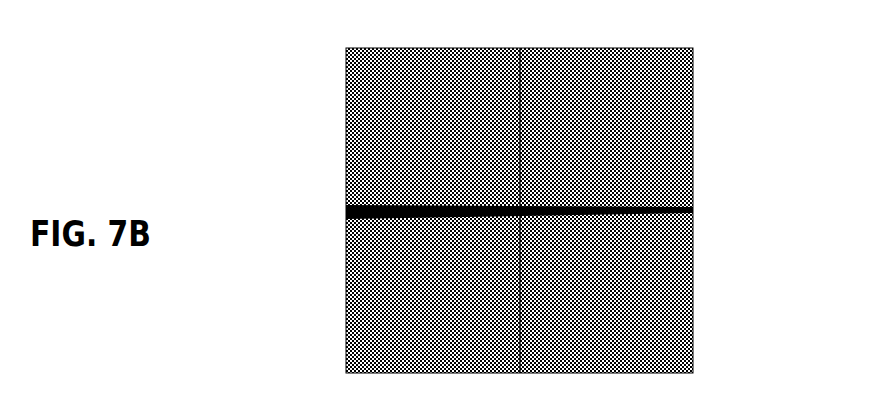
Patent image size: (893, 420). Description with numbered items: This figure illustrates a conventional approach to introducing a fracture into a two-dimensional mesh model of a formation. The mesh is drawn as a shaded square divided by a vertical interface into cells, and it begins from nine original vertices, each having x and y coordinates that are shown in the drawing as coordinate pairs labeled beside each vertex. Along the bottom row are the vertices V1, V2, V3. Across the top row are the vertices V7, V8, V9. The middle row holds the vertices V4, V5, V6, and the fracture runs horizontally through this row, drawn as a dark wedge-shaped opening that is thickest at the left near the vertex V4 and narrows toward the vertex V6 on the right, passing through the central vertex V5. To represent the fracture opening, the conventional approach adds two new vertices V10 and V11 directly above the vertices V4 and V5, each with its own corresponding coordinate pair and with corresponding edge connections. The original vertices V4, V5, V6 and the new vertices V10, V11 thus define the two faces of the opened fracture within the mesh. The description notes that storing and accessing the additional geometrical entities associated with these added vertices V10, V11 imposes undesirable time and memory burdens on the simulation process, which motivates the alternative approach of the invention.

The vertex V1 is at (345, 378).
The vertex V2 is at (533, 378).
The vertex V3 is at (709, 378).
The vertex V4 is at (355, 241).
The vertex V5 is at (522, 241).
The vertex V6 is at (695, 241).
The vertex V7 is at (339, 47).
The vertex V8 is at (524, 47).
The vertex V9 is at (698, 47).
The new vertex V10 is at (384, 173).
The new vertex V11 is at (571, 173).